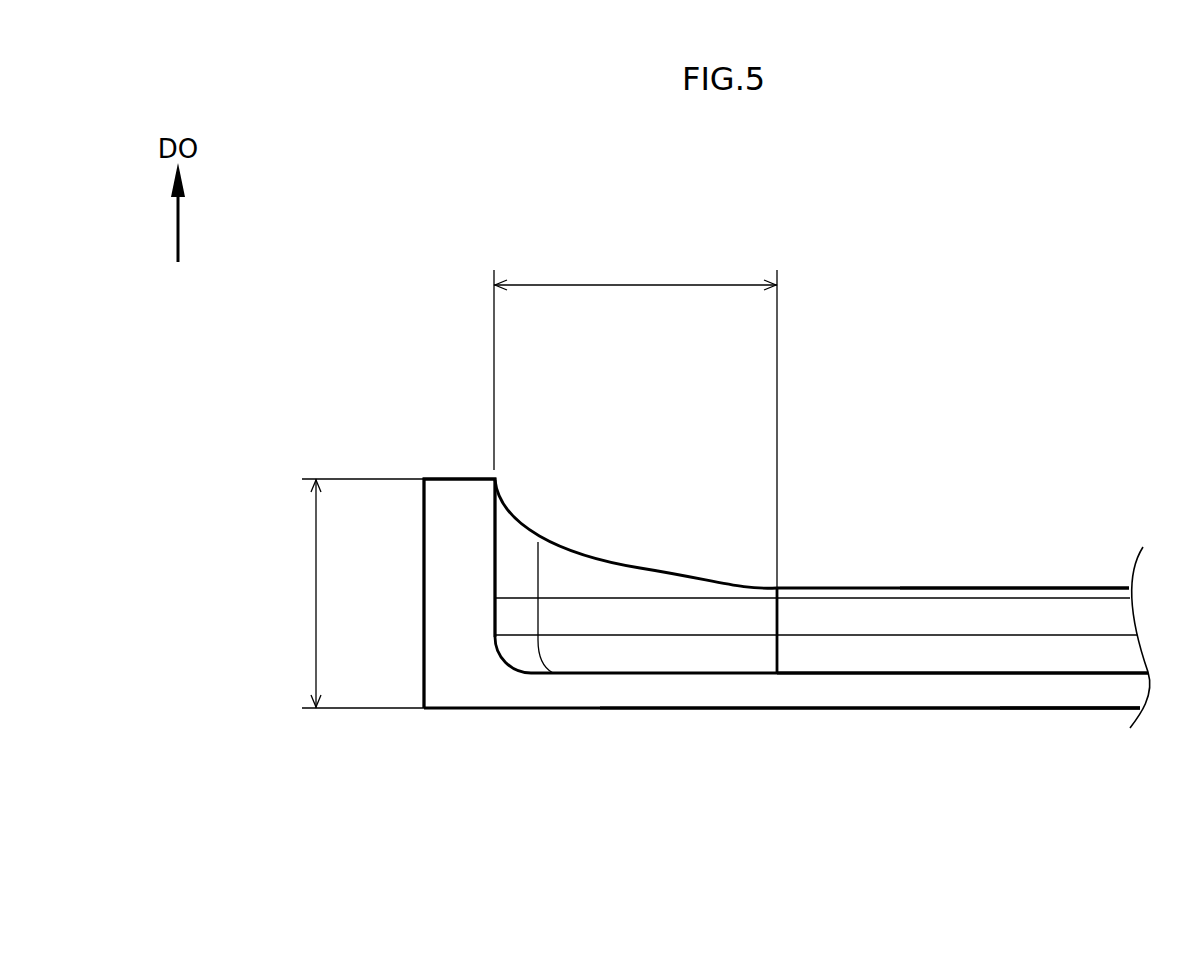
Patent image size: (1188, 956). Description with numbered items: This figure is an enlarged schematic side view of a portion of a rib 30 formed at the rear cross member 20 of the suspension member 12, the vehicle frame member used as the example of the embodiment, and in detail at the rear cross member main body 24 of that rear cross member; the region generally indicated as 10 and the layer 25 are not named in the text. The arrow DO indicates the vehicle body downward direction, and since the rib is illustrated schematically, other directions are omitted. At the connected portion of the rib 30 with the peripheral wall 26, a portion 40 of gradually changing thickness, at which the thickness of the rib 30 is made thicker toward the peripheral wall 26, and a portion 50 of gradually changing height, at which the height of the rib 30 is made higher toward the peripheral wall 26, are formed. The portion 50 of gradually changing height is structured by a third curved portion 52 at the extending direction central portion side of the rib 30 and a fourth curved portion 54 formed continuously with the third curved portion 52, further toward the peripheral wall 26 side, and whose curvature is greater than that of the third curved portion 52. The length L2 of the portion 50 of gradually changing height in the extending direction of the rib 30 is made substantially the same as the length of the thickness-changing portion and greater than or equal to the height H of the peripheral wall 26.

The pneumatic tire / tread portion 10 is at (713, 548).
The suspension member 12 is at (1055, 508).
The rear cross member 20 is at (1102, 712).
The rear cross member main body 24 is at (835, 710).
The intermediate layer 25 is at (985, 672).
The peripheral wall 26 is at (462, 495).
The rib 30 is at (1075, 585).
The portion of gradually changing thickness 40 is at (620, 650).
The portion of gradually changing height 50 is at (590, 542).
The third curved portion 52 is at (626, 563).
The fourth curved portion 54 is at (518, 522).
The height of the peripheral wall H is at (316, 607).
The length of the portion of gradually changing height L2 is at (622, 283).